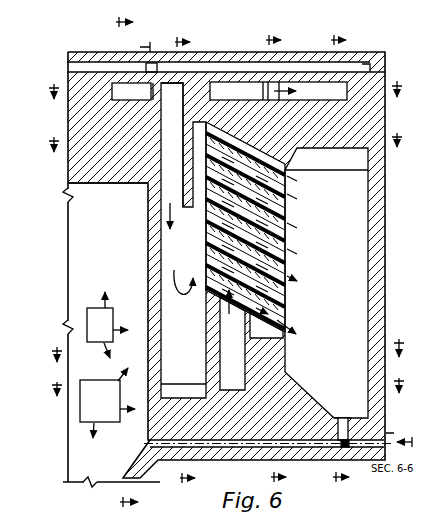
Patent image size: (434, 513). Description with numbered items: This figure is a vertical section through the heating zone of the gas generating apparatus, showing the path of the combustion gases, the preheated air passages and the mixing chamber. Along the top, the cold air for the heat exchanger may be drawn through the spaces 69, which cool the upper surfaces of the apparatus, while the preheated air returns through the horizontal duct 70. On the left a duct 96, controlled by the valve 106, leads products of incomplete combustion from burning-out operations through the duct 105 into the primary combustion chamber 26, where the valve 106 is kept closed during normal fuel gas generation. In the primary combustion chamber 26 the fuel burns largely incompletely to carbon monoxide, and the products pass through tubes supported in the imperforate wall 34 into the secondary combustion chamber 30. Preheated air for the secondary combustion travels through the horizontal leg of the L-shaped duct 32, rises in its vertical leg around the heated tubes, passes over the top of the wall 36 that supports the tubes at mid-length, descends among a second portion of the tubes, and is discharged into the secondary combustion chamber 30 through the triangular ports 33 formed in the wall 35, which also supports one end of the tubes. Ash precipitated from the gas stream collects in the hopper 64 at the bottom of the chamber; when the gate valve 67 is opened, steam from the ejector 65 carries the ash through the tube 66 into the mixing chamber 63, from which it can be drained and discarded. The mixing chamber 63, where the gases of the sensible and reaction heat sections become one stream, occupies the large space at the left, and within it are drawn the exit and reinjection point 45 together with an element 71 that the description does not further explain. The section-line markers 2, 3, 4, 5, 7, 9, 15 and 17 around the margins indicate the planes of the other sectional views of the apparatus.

The spaces 69 is at (385, 62).
The duct 96 is at (132, 91).
The valve 106 is at (157, 101).
The horizontal duct 70 is at (278, 91).
The duct 105 is at (173, 145).
The primary combustion chamber 26 is at (183, 240).
The wall 34 is at (201, 208).
The wall 36 is at (253, 148).
The triangular ports 33 is at (296, 275).
The secondary combustion chamber 30 is at (326, 283).
The wall 35 is at (284, 312).
The L-shaped duct 32 is at (232, 340).
The mixing chamber 63 is at (108, 225).
The unit 71 is at (107, 325).
The exit and reinjection point 45 is at (107, 403).
The hoppers 64 is at (342, 412).
The gate valves 67 is at (349, 430).
The tubes 66 is at (238, 444).
The ejectors 65 is at (350, 447).
The section line 9 is at (133, 262).
The section line 17 is at (195, 261).
The section line 15 is at (287, 259).
The section line 7 is at (346, 259).
The section line 2 is at (226, 103).
The section line 3 is at (226, 155).
The section line 4 is at (229, 362).
The section line 5 is at (229, 398).